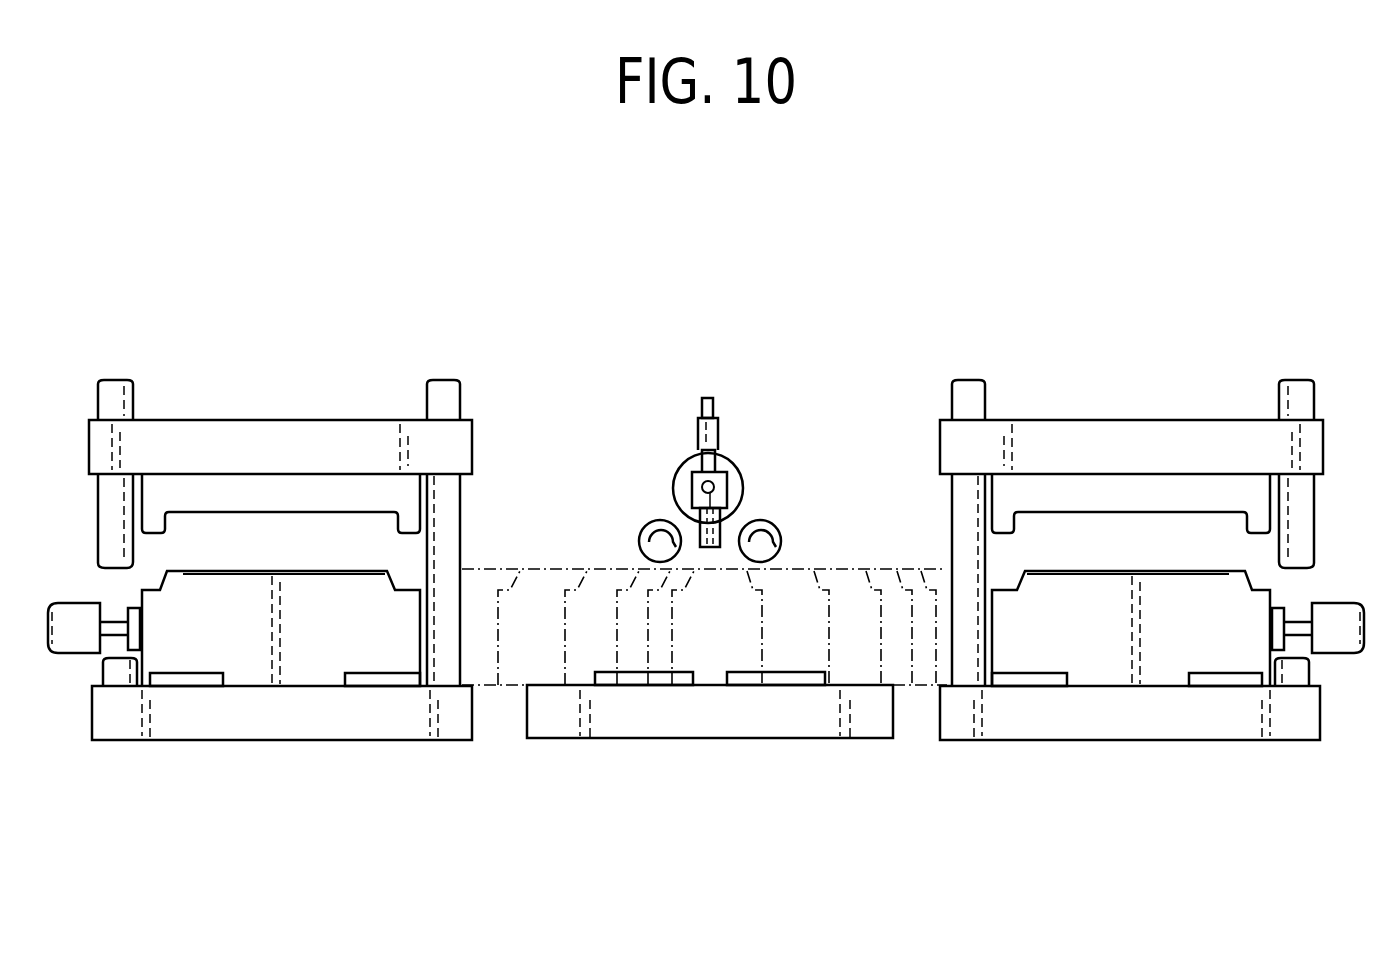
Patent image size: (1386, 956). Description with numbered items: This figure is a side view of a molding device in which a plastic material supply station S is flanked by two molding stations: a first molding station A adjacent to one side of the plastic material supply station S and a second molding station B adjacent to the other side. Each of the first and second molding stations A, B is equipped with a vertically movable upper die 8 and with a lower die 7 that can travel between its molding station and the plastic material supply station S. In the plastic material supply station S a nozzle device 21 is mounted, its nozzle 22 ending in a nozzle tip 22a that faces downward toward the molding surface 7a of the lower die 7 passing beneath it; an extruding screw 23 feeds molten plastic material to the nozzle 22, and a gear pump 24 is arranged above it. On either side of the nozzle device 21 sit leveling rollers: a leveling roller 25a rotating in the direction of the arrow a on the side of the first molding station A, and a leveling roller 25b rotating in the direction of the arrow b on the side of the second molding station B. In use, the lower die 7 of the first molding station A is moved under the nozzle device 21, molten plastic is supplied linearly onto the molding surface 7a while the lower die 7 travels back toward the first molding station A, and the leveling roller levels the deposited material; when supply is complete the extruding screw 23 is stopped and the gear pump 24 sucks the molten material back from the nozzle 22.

The lower die 7 is at (368, 598).
The molding surface 7a is at (323, 571).
The upper die 8 is at (408, 492).
The nozzle device 21 is at (666, 458).
The nozzle 22 is at (728, 472).
The nozzle 22a is at (720, 547).
The extruding screw 23 is at (722, 458).
The gear pump 24 is at (722, 413).
The leveling roller 25a is at (641, 536).
The leveling roller 25b is at (770, 529).
The first molding station A is at (306, 412).
The second molding station B is at (1147, 420).
The plastic material supply station S is at (858, 478).
The arrow a is at (653, 519).
The arrow b is at (766, 519).